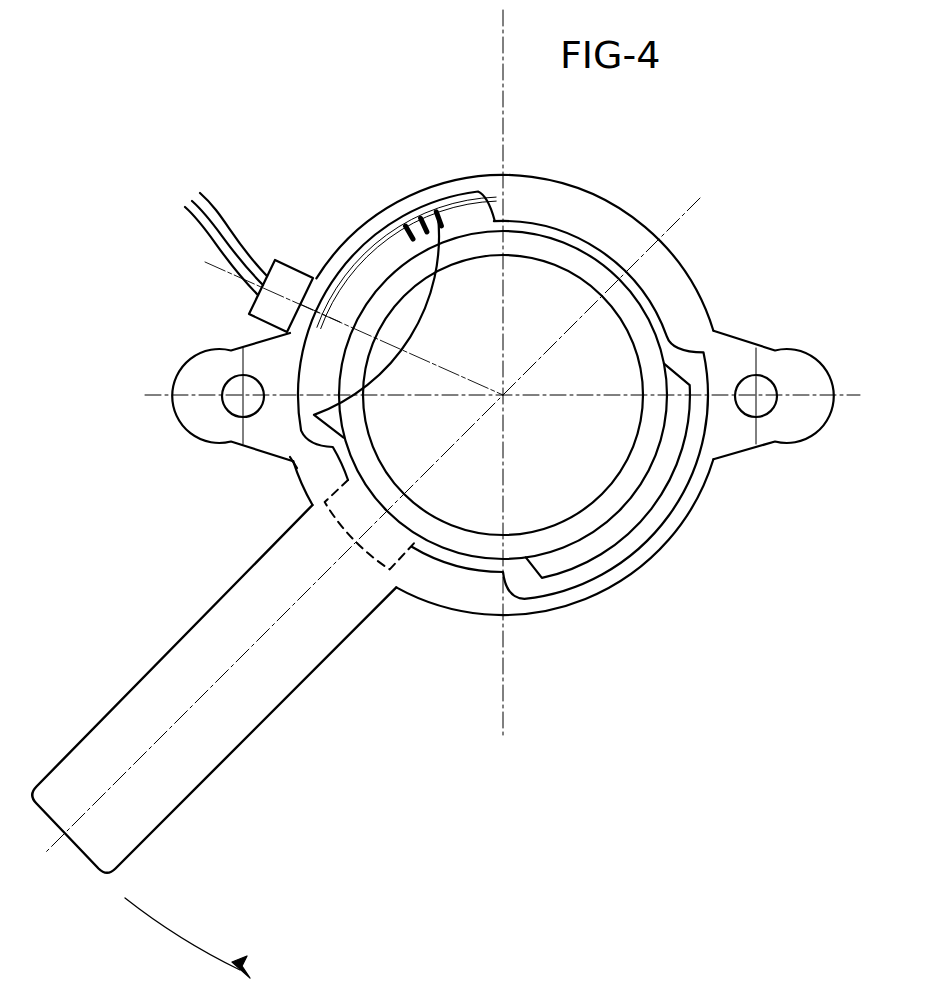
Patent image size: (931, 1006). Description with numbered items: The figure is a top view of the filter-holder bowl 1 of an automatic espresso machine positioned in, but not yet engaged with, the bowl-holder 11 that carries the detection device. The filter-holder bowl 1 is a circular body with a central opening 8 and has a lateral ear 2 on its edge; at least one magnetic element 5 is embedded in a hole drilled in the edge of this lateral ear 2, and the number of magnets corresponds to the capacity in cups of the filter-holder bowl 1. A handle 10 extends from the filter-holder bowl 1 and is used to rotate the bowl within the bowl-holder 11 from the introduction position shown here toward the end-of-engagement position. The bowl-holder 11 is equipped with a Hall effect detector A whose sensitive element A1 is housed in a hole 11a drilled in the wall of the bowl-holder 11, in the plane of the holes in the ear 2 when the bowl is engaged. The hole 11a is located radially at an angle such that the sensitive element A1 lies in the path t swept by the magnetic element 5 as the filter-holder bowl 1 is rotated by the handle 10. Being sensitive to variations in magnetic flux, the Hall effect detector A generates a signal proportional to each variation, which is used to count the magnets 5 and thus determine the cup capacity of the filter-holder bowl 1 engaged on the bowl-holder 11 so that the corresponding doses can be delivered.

The filter-holder bowl 1 is at (640, 323).
The lateral ear 2 is at (385, 255).
The magnetic element 5 is at (437, 218).
The central opening 8 is at (560, 418).
The handle 10 is at (298, 686).
The bowl-holder 11 is at (640, 232).
The hole 11a is at (323, 277).
The Hall effect detector A is at (250, 310).
The sensitive element A1 is at (332, 296).
The path t is at (297, 468).